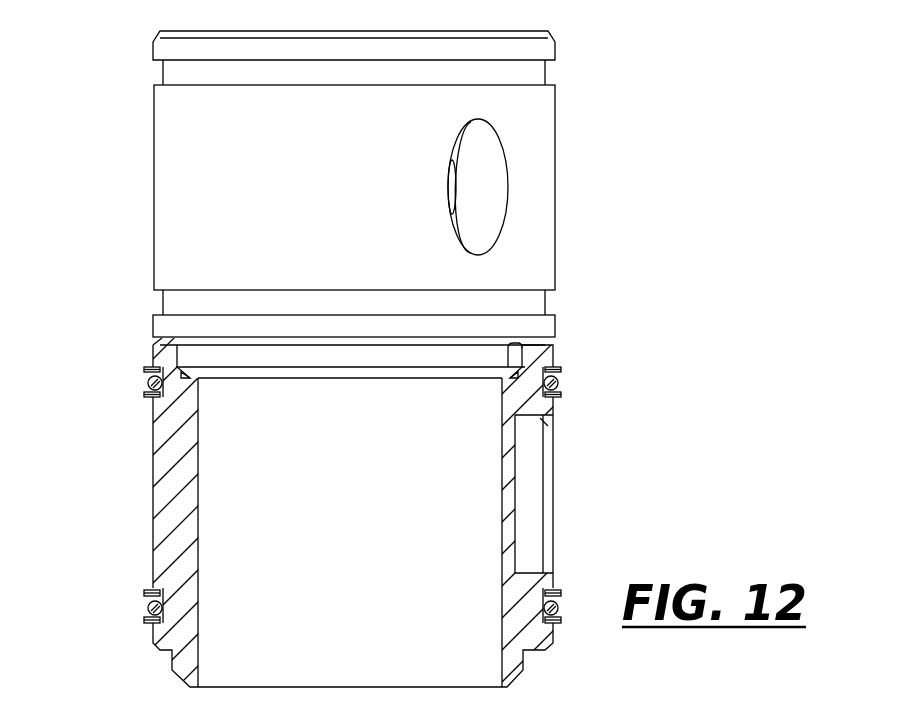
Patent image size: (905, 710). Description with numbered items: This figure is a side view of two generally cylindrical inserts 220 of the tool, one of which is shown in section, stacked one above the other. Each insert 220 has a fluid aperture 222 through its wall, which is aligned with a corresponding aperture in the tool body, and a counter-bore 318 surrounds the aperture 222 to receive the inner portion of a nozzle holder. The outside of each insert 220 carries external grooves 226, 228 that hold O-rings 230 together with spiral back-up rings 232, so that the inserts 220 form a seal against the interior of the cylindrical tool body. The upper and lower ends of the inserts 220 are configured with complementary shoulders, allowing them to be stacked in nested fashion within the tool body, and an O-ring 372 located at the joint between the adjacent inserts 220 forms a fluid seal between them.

The insert 220 is at (547, 133).
The fluid aperture 222 is at (455, 185).
The external groove 226 is at (160, 78).
The external groove 228 is at (164, 300).
The O-ring 230 is at (150, 383).
The spiral back-up ring 232 is at (150, 370).
The counter-bore 318 is at (483, 215).
The O-ring 372 is at (513, 343).